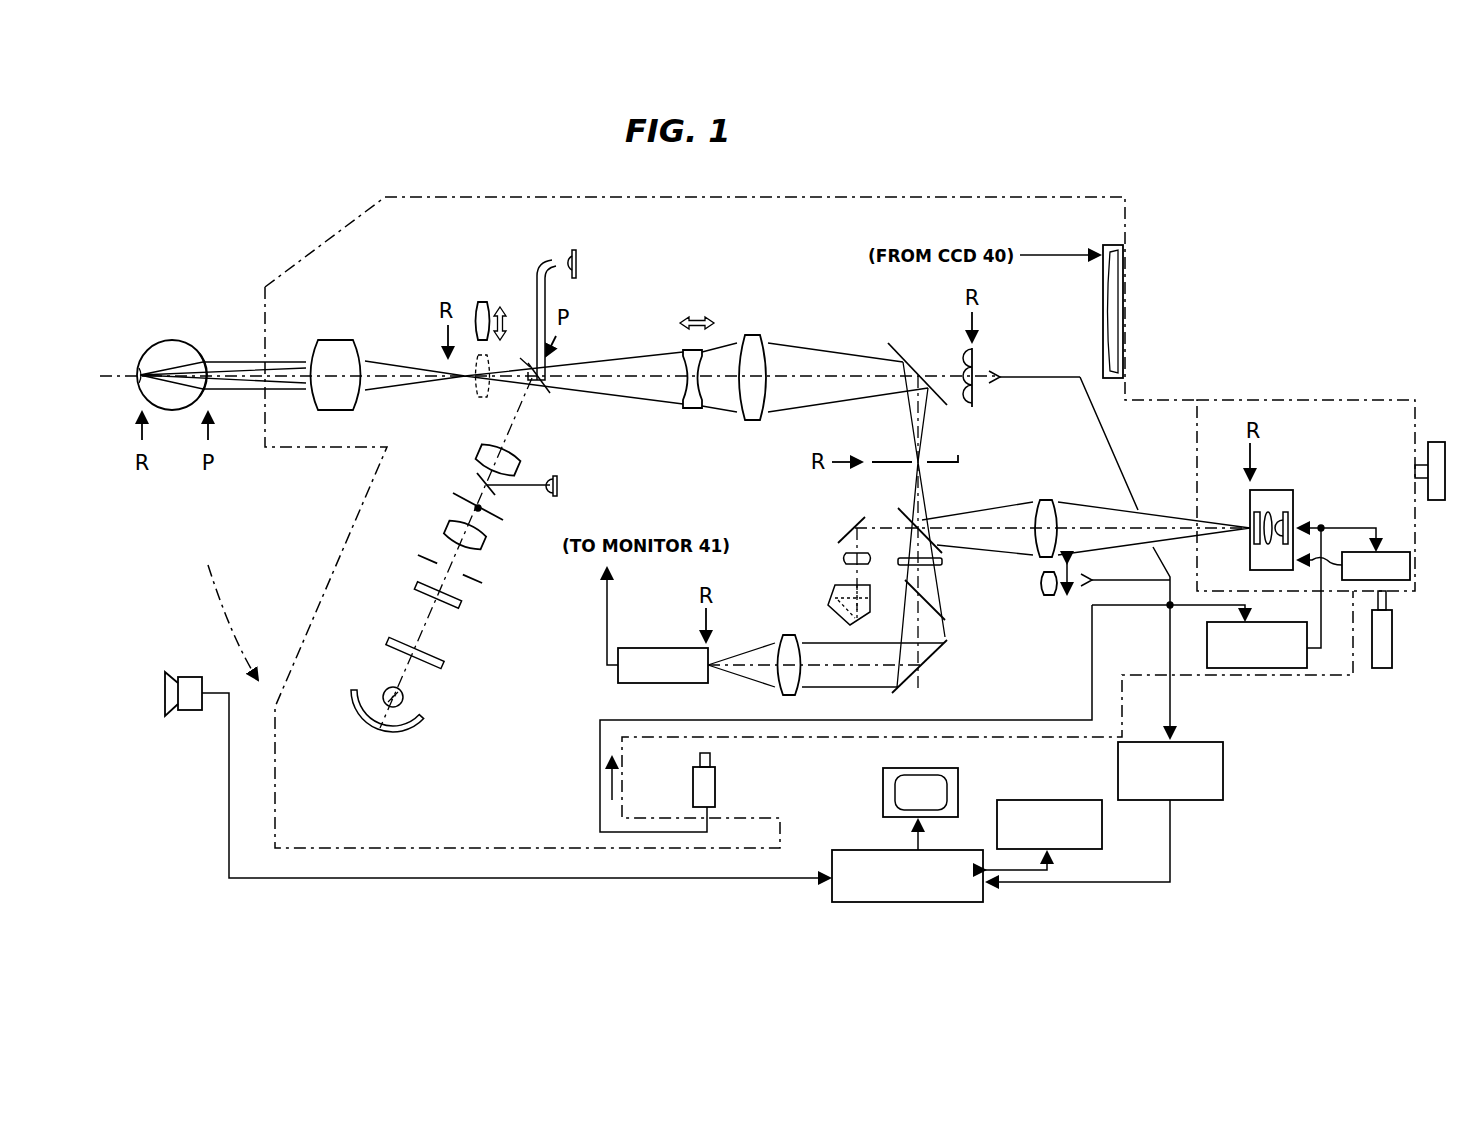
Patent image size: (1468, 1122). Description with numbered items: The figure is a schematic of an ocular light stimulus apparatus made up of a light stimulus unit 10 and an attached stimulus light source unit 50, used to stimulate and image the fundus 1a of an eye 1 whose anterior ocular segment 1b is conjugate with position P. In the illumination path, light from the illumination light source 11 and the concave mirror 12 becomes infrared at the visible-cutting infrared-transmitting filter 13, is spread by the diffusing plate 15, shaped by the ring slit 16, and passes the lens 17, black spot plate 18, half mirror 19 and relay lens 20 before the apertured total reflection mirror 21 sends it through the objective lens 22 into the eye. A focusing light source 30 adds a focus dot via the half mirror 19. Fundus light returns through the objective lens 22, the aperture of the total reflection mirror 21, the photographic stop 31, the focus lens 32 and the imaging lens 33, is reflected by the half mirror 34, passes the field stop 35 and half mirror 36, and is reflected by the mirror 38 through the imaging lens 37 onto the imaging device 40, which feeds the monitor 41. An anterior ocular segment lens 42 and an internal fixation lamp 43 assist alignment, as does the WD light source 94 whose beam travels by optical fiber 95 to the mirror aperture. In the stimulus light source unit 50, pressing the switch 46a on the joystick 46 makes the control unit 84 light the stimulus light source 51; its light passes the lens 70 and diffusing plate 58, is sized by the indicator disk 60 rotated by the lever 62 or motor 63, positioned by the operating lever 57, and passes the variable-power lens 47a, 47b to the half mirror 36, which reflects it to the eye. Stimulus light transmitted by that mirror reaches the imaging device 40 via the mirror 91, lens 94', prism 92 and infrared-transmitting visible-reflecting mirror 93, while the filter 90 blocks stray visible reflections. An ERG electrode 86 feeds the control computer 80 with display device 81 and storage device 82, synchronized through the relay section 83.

The eye under examination 1 is at (158, 352).
The fundus 1a is at (140, 382).
The anterior ocular segment 1b is at (207, 387).
The light stimulus unit 10 is at (761, 522).
The illumination light source 11 is at (384, 690).
The concave mirror 12 is at (418, 722).
The visible-cutting infrared-transmitting filter 13 is at (440, 663).
The diffusing plate 15 is at (462, 602).
The ring slit 16 is at (416, 552).
The lens 17 is at (478, 547).
The black spot plate 18 is at (492, 515).
The half mirror 19 is at (475, 485).
The relay lens 20 is at (478, 458).
The total reflection mirror 21 is at (555, 395).
The objective lens 22 is at (360, 410).
The focusing light source 30 is at (560, 484).
The photographic stop 31 is at (546, 388).
The focus lens 32 is at (686, 352).
The imaging lens 33 is at (753, 335).
The half mirror 34 is at (898, 352).
The field stop 35 is at (960, 455).
The half mirror 36 is at (896, 515).
The imaging lens 37 is at (788, 635).
The mirror 38 is at (935, 665).
The imaging device 40 is at (668, 648).
The monitor 41 is at (1110, 245).
The anterior ocular segment lens 42 is at (483, 300).
The internal fixation lamp 43 is at (981, 368).
The joystick 46 is at (715, 790).
The switch 46a is at (712, 758).
The variable-power lens 47a is at (1050, 500).
The variable-power lens 47b is at (1049, 597).
The stimulus light source unit 50 is at (1350, 395).
The stimulus light source 51 is at (1287, 512).
The operating lever 57 is at (1437, 442).
The diffusing plate 58 is at (1266, 512).
The indicator disk 60 is at (1254, 515).
The lever 62 is at (1382, 668).
The motor 63 is at (1378, 548).
The lens 70 is at (1272, 560).
The control computer 80 is at (868, 850).
The display device 81 is at (960, 792).
The storage device 82 is at (1050, 800).
The relay section 83 is at (1205, 742).
The control unit 84 is at (1262, 622).
The ERG electrode 86 is at (185, 677).
The filter 90 is at (944, 566).
The mirror 91 is at (835, 540).
The prism 92 is at (836, 592).
The infrared-transmitting visible-reflecting mirror 93 is at (947, 615).
The WD light source 94 is at (592, 255).
The lens 94' is at (822, 548).
The optical fiber 95 is at (536, 290).